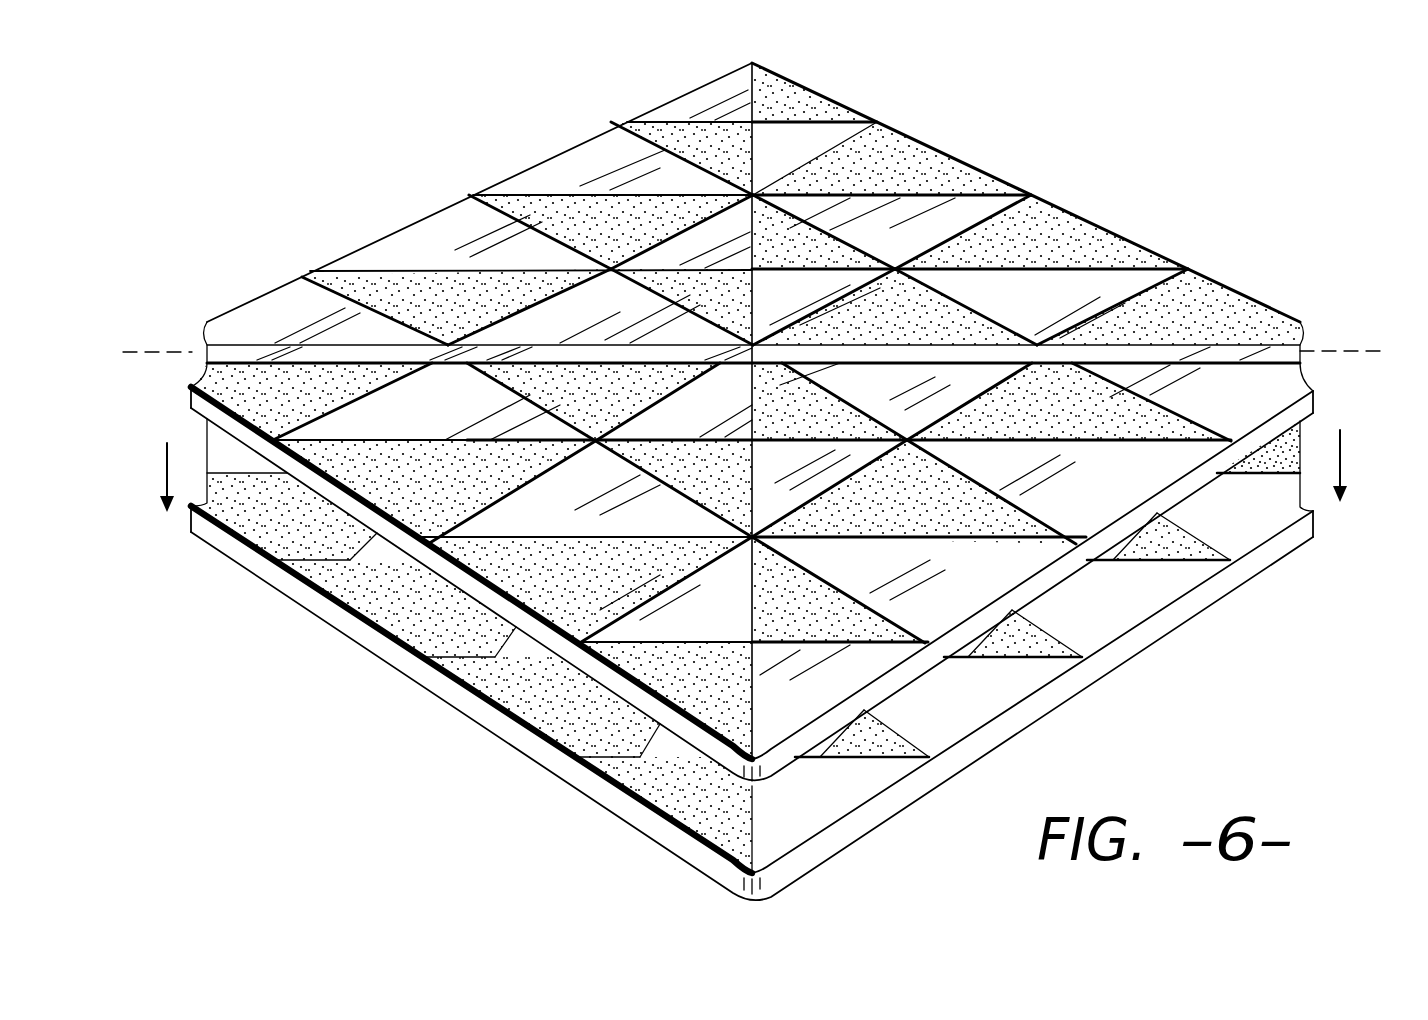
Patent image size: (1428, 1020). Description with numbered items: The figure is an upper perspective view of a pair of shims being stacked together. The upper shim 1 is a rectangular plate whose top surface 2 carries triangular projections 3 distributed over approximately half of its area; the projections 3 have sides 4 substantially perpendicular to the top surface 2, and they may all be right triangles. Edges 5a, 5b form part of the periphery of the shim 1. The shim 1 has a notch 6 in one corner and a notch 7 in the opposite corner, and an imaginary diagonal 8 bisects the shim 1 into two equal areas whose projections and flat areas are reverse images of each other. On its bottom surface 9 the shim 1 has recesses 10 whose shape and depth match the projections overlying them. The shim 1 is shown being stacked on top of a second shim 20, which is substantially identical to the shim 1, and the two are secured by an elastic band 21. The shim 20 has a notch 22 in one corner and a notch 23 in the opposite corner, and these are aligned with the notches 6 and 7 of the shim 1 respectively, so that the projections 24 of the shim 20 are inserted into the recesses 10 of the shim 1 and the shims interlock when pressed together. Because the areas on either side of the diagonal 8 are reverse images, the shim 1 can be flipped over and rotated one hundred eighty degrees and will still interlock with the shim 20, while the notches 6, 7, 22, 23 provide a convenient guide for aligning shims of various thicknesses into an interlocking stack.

The shim 1 is at (753, 455).
The top surface 2 is at (593, 158).
The projections 3 is at (547, 210).
The sides 4 is at (354, 292).
The edge 5a is at (1200, 477).
The edge 5b is at (623, 689).
The notch 6 is at (205, 340).
The notch 7 is at (1302, 333).
The diagonal 8 is at (152, 357).
The bottom surface 9 is at (338, 593).
The recesses 10 is at (280, 487).
The shim 20 is at (1178, 603).
The elastic band 21 is at (312, 357).
The notch 22 is at (205, 448).
The notch 23 is at (1303, 437).
The projections 24 is at (398, 612).